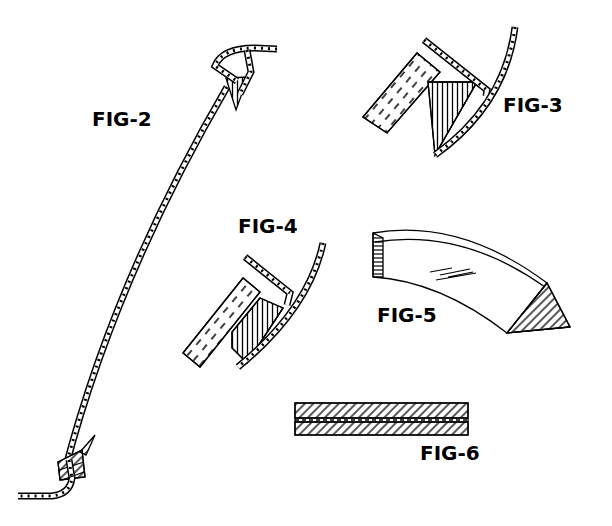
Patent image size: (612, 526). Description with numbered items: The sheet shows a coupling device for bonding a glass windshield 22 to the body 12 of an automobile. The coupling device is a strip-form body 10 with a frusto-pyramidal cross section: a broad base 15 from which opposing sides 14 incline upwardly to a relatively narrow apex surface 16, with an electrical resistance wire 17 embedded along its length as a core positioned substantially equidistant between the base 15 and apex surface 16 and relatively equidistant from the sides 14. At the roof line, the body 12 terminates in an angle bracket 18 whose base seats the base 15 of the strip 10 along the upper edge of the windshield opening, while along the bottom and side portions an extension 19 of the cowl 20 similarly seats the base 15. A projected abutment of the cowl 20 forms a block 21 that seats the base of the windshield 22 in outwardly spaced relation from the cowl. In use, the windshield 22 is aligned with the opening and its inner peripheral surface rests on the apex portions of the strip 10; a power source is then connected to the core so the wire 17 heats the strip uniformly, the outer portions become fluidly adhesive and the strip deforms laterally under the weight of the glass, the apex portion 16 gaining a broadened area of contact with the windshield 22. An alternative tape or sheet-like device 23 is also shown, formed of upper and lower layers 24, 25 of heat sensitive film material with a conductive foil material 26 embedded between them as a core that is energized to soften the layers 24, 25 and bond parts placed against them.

In FIG. 5, the body 10 is at (522, 261).
In FIG. 2, the body of the automobile 12 is at (254, 72).
In FIG. 3, the body of the automobile 12 is at (520, 34).
In FIG. 4, the body of the automobile 12 is at (328, 253).
In FIG. 2, the opposing sides 14 is at (237, 93).
In FIG. 3, the opposing sides 14 is at (428, 123).
In FIG. 4, the opposing sides 14 is at (231, 358).
In FIG. 5, the opposing sides 14 is at (551, 291).
In FIG. 5, the base 15 is at (543, 331).
In FIG. 5, the apex surface 16 is at (471, 241).
In FIG. 3, the electrical resistance wire 17 is at (464, 122).
In FIG. 4, the electrical resistance wire 17 is at (278, 343).
In FIG. 5, the electrical resistance wire 17 is at (521, 301).
In FIG. 2, the angle bracket 18 is at (213, 68).
In FIG. 3, the angle bracket 18 is at (452, 54).
In FIG. 4, the angle bracket 18 is at (262, 267).
In FIG. 2, the extension 19 is at (79, 478).
In FIG. 2, the cowl 20 is at (36, 495).
In FIG. 2, the block 21 is at (66, 458).
In FIG. 2, the glass windshield 22 is at (172, 182).
In FIG. 3, the glass windshield 22 is at (378, 102).
In FIG. 4, the glass windshield 22 is at (218, 311).
In FIG. 6, the device 23 is at (336, 402).
In FIG. 6, the upper layer 24 is at (430, 402).
In FIG. 6, the lower layer 25 is at (348, 437).
In FIG. 6, the conductive foil material 26 is at (408, 437).